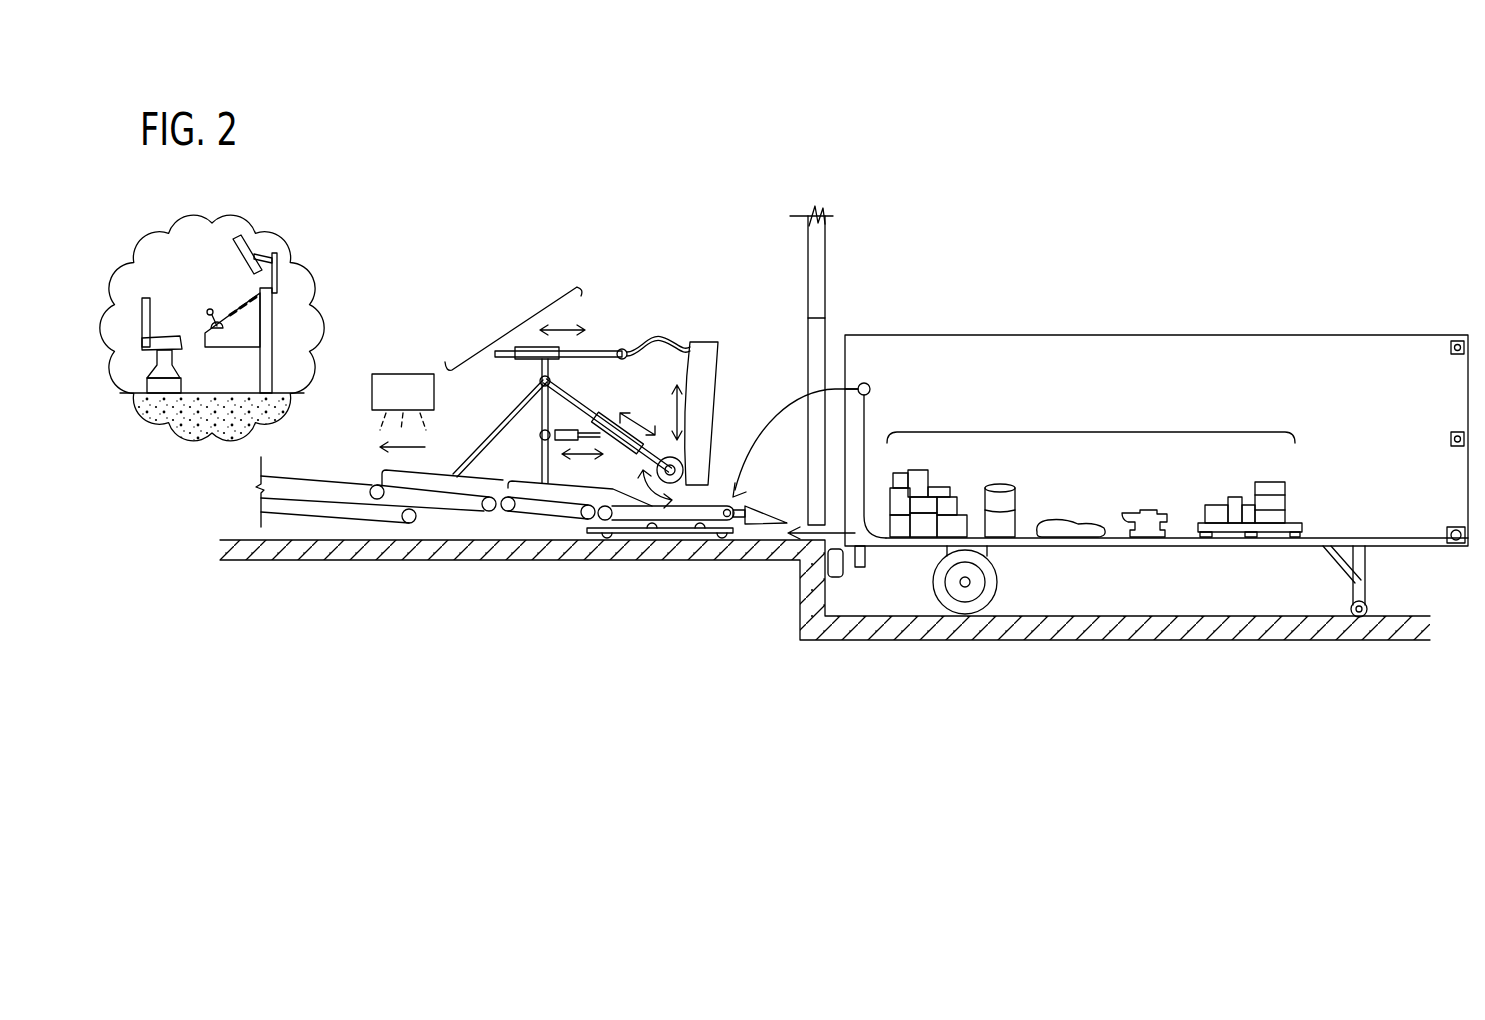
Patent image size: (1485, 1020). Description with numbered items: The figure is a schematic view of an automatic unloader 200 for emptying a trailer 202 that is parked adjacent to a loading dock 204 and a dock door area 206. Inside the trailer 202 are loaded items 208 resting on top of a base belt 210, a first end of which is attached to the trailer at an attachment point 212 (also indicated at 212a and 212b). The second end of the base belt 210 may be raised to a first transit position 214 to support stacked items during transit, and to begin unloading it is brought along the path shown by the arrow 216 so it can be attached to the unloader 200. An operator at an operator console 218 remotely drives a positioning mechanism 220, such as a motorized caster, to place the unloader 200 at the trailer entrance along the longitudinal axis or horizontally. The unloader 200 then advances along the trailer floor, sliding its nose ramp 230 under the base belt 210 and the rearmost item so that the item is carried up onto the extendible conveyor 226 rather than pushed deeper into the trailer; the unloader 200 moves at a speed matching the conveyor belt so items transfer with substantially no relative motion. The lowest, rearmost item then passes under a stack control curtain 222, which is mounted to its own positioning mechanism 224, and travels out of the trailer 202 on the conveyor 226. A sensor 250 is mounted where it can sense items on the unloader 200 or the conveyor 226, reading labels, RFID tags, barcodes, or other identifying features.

The automatic unloader 200 is at (656, 283).
The trailer 202 is at (1135, 335).
The loading dock 204 is at (831, 318).
The dock door area 206 is at (808, 360).
The items 208 is at (1090, 430).
The base belt 210 is at (1325, 538).
The attachment point 212 is at (1457, 528).
The sensor 212a is at (1451, 441).
The sensor 212b is at (1451, 346).
The first transit position 214 is at (878, 426).
The arrow 216 is at (772, 423).
The operator console 218 is at (193, 428).
The positioning mechanism 220 is at (640, 540).
The stack control curtain 222 is at (705, 342).
The positioning mechanism 224 is at (512, 319).
The extendible conveyor 226 is at (497, 518).
The nose ramp 230 is at (758, 512).
The sensor 250 is at (402, 373).